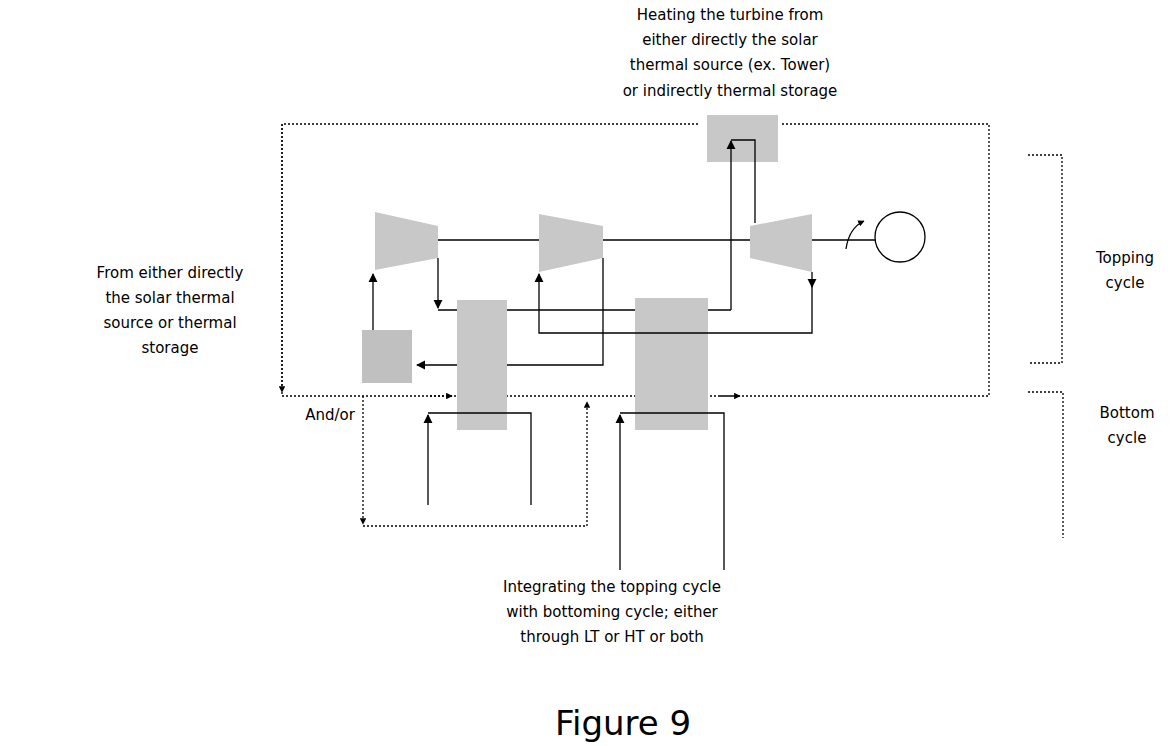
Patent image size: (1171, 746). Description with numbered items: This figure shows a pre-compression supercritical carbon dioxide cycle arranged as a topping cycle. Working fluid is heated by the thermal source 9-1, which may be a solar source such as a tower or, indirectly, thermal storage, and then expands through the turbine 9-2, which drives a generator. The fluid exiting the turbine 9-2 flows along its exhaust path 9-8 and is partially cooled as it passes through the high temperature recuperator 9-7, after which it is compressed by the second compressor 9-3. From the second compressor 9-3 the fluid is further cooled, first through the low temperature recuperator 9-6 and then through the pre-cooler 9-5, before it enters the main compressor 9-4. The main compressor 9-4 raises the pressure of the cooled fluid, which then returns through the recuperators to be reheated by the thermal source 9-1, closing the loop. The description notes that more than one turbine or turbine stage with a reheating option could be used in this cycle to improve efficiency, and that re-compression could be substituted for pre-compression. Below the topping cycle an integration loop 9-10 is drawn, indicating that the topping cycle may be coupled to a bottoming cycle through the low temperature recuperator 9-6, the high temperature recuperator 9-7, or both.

The thermal source 9-1 is at (784, 122).
The turbine 9-2 is at (837, 225).
The second compressor 9-3 is at (583, 277).
The main compressor 9-4 is at (553, 249).
The pre-cooler 9-5 is at (362, 328).
The low temperature recuperator 9-6 is at (484, 402).
The high temperature recuperator 9-7 is at (685, 434).
The turbine exhaust line 9-8 is at (812, 321).
The integration loop 9-10 is at (843, 404).